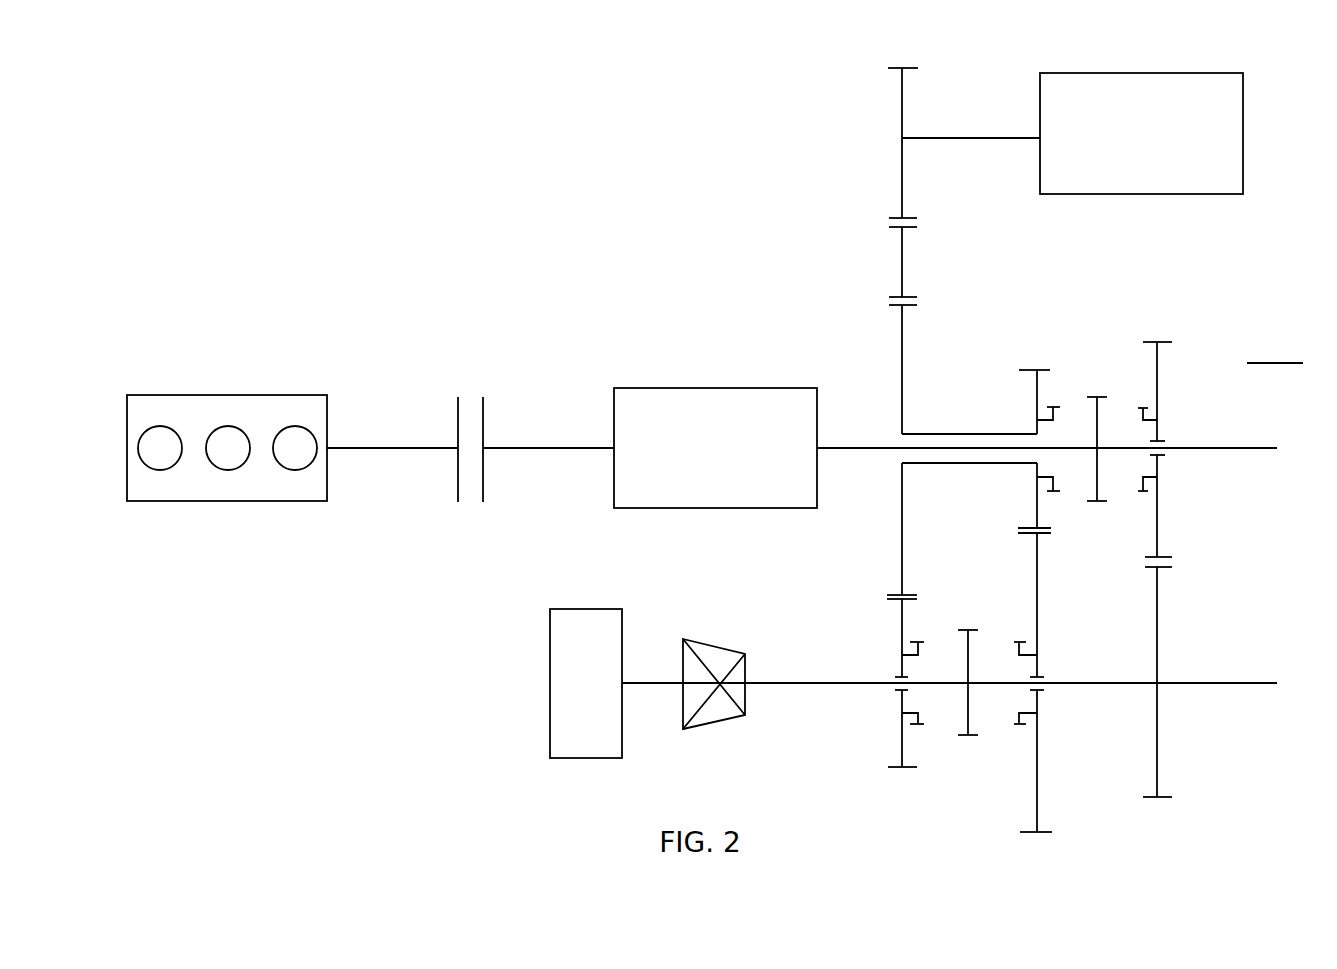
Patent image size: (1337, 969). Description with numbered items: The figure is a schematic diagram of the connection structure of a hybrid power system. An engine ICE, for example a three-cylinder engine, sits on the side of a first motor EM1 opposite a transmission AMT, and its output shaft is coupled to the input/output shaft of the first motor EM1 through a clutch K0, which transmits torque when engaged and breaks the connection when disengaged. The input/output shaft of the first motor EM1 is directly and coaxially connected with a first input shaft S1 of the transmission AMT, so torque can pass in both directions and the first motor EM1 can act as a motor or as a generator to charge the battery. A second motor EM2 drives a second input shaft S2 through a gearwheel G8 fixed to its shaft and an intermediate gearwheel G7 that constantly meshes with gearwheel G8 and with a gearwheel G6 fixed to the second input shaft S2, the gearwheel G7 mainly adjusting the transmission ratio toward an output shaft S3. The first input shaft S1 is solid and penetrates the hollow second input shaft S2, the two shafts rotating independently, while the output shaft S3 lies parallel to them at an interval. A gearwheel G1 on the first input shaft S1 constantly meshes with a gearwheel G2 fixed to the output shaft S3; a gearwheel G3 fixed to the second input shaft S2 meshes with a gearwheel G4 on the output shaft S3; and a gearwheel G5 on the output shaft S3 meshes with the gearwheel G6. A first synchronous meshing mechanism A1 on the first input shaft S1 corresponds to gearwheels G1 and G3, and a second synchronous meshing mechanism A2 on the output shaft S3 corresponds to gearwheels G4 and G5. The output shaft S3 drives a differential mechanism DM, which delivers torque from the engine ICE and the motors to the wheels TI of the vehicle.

The engine ICE is at (227, 425).
The clutch K0 is at (470, 430).
The first motor EM1 is at (715, 448).
The second motor EM2 is at (1072, 133).
The first input shaft S1 is at (1065, 449).
The second input shaft S2 is at (973, 499).
The output shaft S3 is at (967, 684).
The gearwheel G1 is at (1156, 436).
The gearwheel G2 is at (1157, 698).
The gearwheel G3 is at (1036, 386).
The gearwheel G4 is at (1034, 699).
The gearwheel G5 is at (905, 698).
The gearwheel G6 is at (887, 369).
The gearwheel G7 is at (887, 262).
The gearwheel G8 is at (903, 127).
The first synchronous meshing mechanism A1 is at (1100, 432).
The second synchronous meshing mechanism A2 is at (968, 667).
The wheels TI is at (586, 683).
The differential mechanism DM is at (714, 661).
The transmission AMT is at (1275, 351).